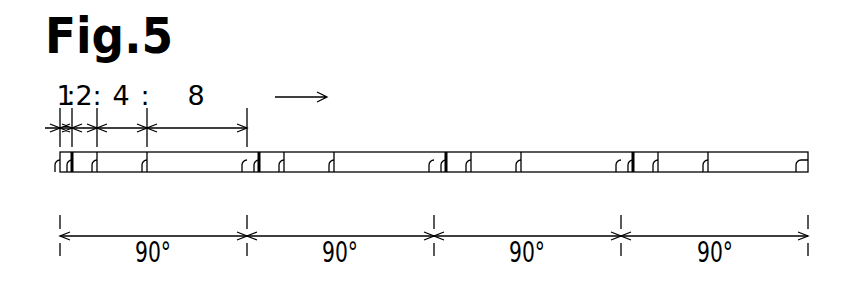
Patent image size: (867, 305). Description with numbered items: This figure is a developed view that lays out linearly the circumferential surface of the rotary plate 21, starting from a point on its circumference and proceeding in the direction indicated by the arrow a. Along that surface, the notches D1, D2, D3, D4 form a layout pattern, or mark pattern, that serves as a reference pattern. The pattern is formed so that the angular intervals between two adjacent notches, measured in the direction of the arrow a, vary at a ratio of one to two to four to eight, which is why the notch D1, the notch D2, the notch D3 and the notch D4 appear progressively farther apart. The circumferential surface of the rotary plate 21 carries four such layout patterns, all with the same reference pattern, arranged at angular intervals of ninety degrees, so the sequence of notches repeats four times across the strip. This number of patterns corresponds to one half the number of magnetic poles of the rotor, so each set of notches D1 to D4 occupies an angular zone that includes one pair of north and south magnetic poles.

The rotary plate 21 is at (404, 144).
The arrow a is at (301, 85).
The notch D1 is at (53, 172).
The notch D2 is at (68, 173).
The notch D3 is at (93, 173).
The notch D4 is at (143, 173).